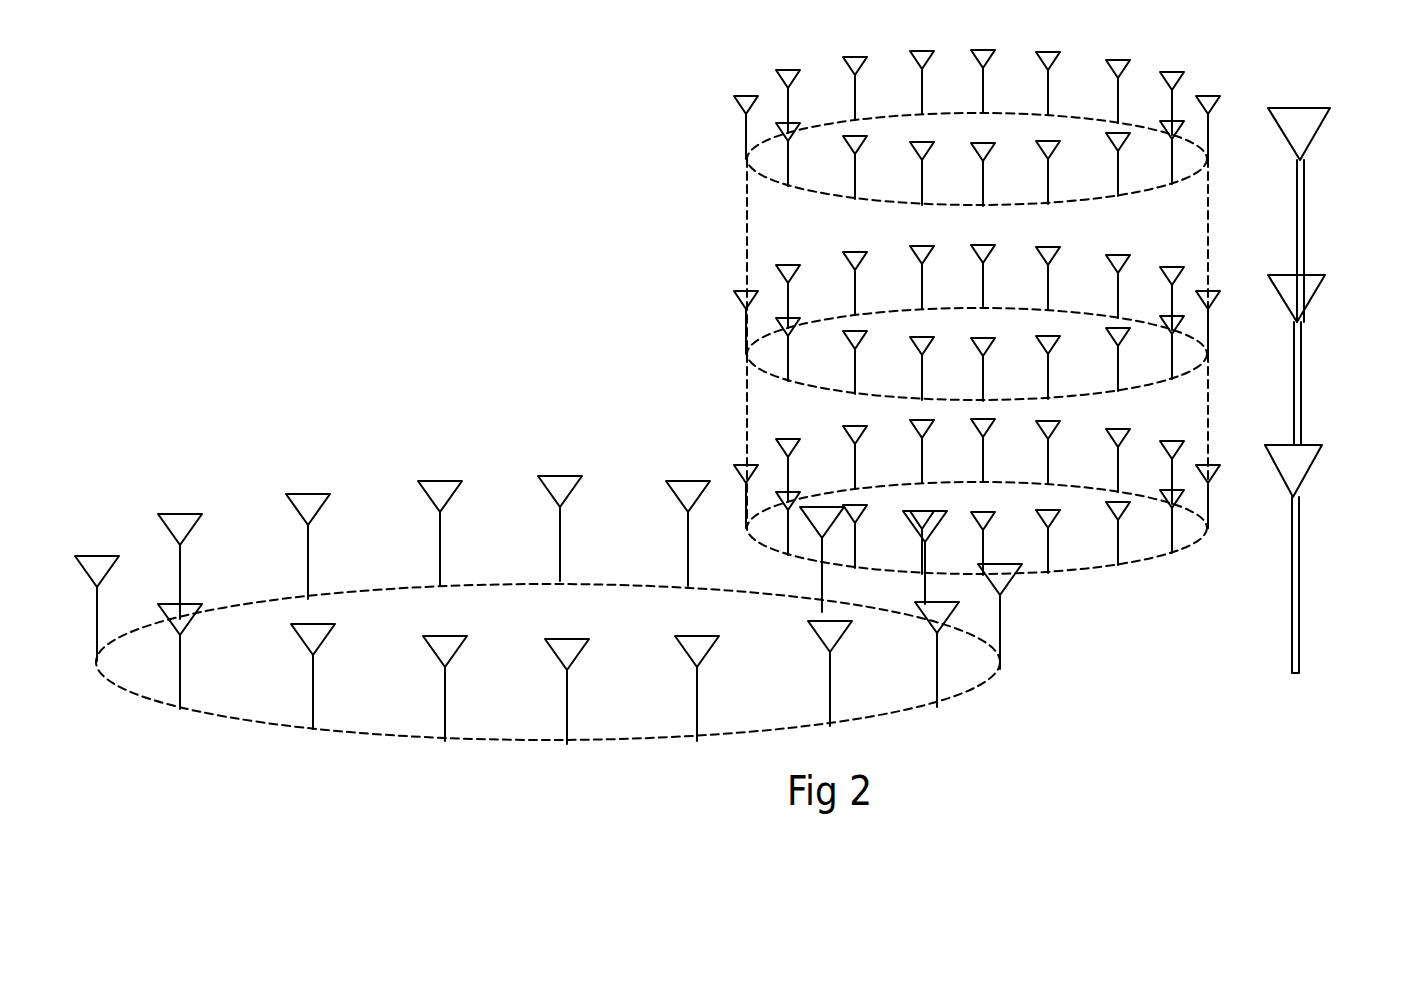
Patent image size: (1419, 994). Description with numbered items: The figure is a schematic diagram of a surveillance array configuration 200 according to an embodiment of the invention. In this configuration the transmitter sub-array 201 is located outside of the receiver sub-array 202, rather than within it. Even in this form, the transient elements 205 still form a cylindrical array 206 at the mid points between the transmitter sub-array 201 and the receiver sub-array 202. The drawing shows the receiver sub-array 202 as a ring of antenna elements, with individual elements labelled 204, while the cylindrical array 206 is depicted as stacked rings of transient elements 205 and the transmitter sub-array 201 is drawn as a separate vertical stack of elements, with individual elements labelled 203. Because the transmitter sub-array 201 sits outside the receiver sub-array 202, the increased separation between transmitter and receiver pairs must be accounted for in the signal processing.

The surveillance array configuration 200 is at (457, 237).
The transmitter sub-array 201 is at (1305, 213).
The receiver sub-array 202 is at (267, 722).
The radiating elements 203 is at (1298, 460).
The antenna elements of circular array 204 is at (680, 642).
The transient elements 205 is at (1175, 510).
The cylindrical array 206 is at (743, 212).